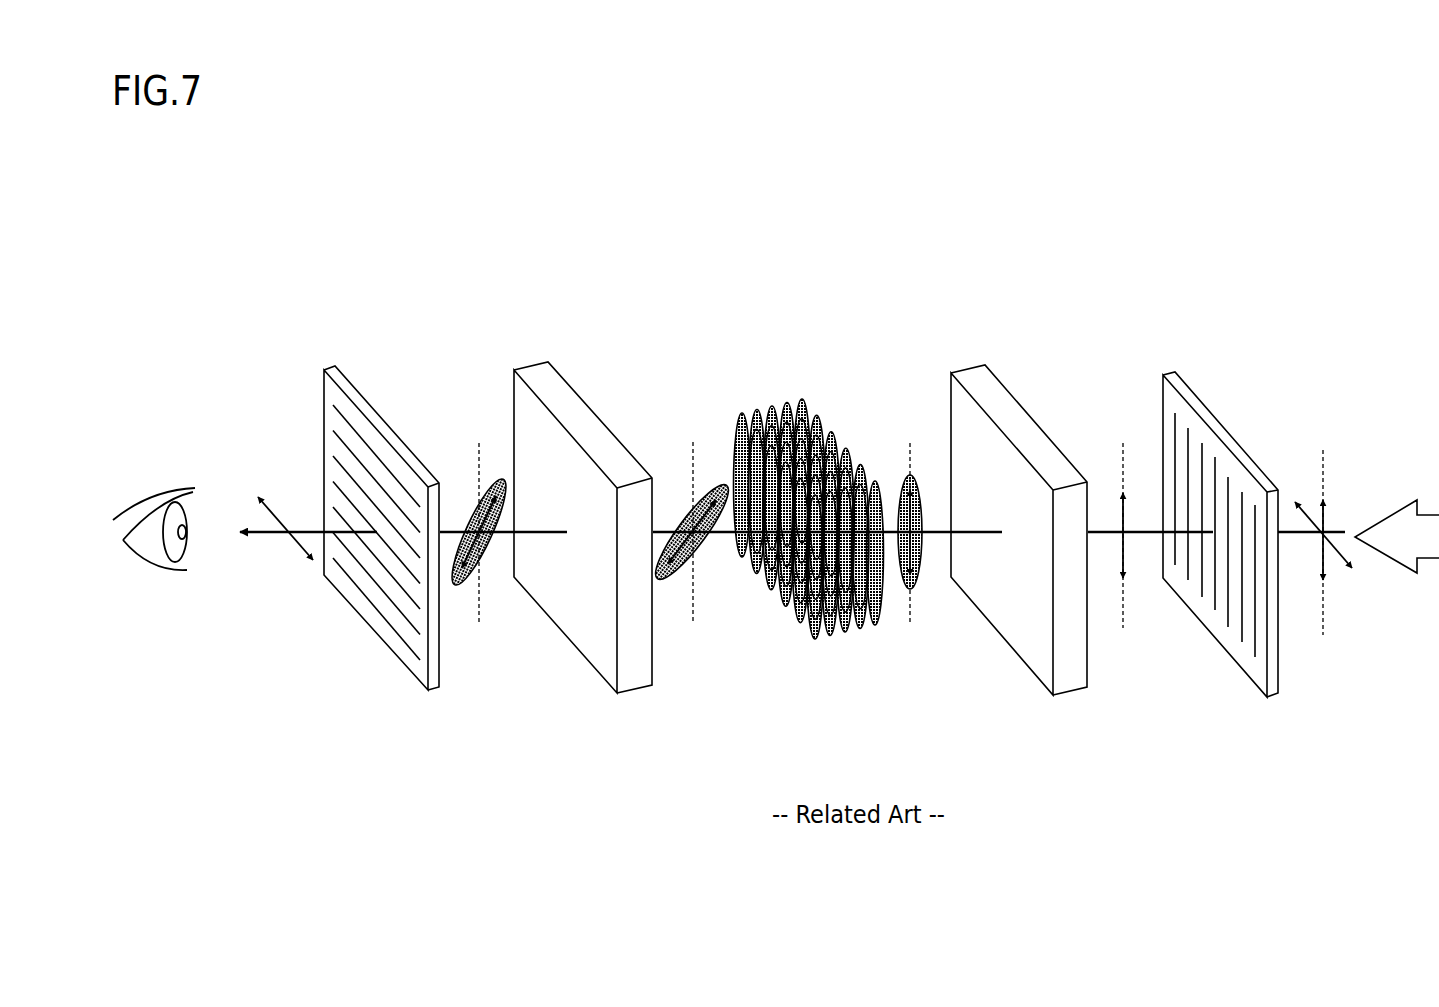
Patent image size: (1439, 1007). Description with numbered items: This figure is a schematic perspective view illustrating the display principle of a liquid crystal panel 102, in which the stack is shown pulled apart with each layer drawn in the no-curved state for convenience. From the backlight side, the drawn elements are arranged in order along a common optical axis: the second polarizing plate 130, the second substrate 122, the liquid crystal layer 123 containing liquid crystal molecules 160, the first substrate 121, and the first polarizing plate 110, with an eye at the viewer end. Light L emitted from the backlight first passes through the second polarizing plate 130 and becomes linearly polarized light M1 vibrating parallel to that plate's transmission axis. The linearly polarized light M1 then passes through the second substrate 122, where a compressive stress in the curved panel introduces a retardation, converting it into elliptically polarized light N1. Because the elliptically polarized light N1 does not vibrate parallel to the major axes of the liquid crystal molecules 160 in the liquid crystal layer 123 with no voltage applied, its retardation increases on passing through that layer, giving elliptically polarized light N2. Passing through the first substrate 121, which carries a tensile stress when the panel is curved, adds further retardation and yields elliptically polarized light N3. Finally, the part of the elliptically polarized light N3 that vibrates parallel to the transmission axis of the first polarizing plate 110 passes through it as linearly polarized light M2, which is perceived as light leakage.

The display device (related art) 102 is at (462, 232).
The first polarizing plate 110 is at (336, 368).
The first substrate 121 is at (542, 378).
The second substrate 122 is at (975, 380).
The liquid crystal layer 123 is at (785, 380).
The second polarizing plate 130 is at (1173, 375).
The liquid crystal molecules 160 is at (743, 412).
The elliptically polarized light N1 is at (923, 533).
The elliptically polarized light N2 is at (692, 532).
The elliptically polarized light N3 is at (478, 533).
The linearly polarized light M1 is at (1141, 535).
The linearly polarized light M2 is at (285, 513).
The light L is at (1367, 542).